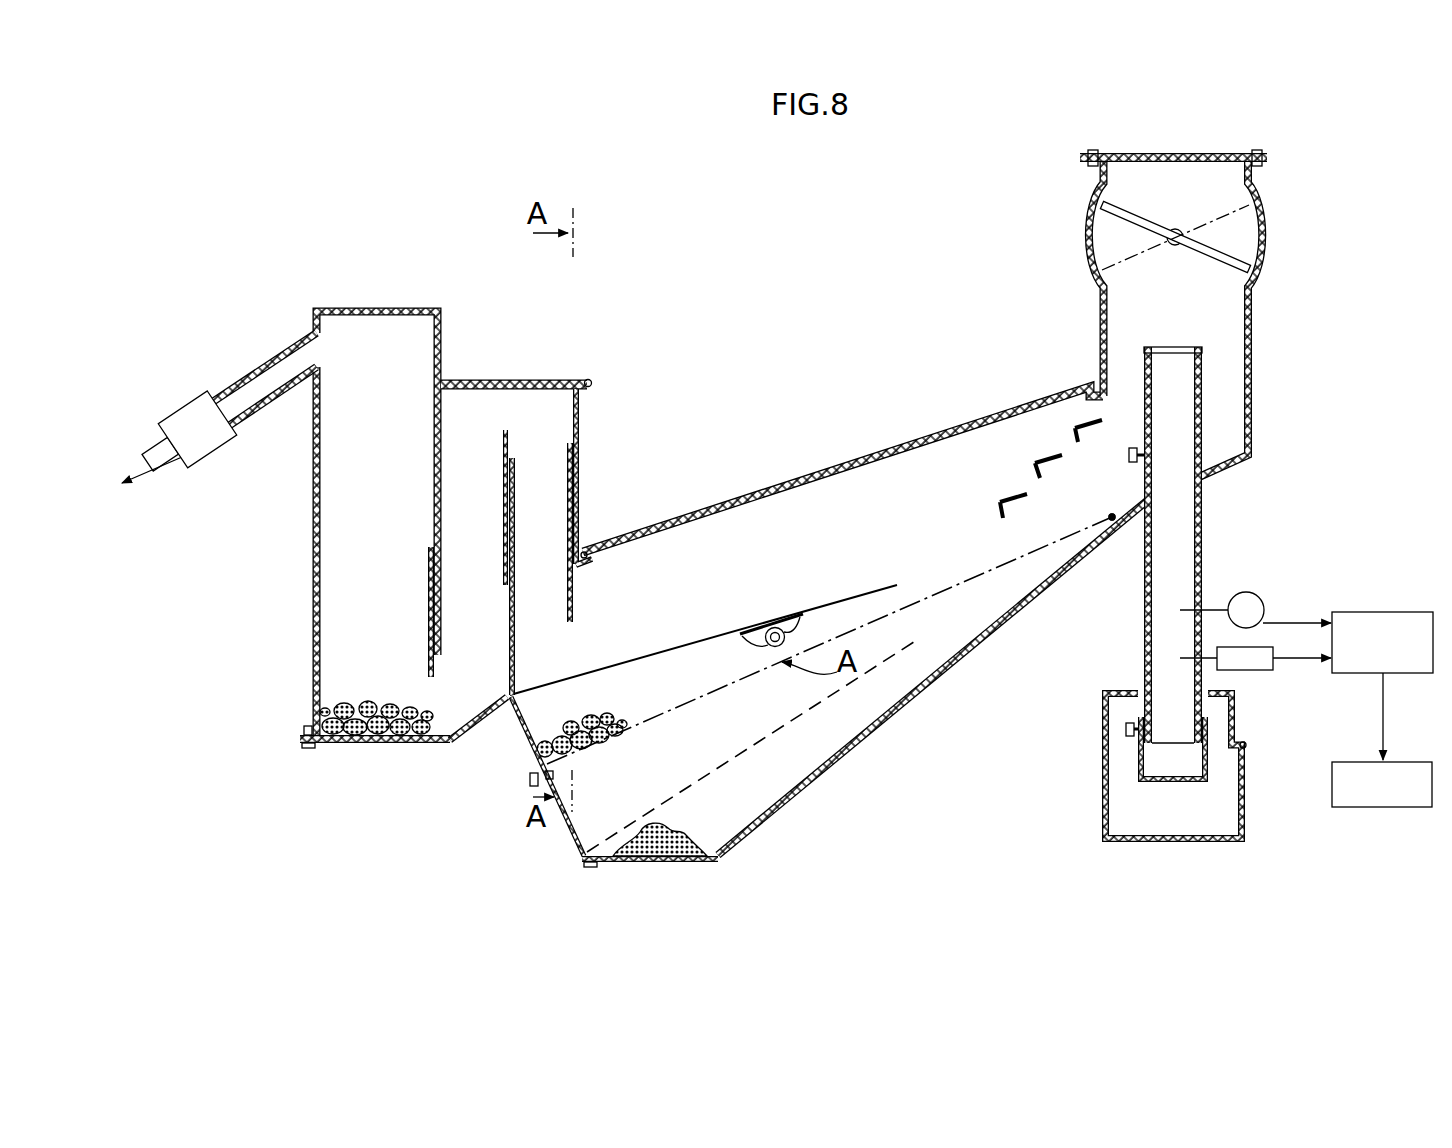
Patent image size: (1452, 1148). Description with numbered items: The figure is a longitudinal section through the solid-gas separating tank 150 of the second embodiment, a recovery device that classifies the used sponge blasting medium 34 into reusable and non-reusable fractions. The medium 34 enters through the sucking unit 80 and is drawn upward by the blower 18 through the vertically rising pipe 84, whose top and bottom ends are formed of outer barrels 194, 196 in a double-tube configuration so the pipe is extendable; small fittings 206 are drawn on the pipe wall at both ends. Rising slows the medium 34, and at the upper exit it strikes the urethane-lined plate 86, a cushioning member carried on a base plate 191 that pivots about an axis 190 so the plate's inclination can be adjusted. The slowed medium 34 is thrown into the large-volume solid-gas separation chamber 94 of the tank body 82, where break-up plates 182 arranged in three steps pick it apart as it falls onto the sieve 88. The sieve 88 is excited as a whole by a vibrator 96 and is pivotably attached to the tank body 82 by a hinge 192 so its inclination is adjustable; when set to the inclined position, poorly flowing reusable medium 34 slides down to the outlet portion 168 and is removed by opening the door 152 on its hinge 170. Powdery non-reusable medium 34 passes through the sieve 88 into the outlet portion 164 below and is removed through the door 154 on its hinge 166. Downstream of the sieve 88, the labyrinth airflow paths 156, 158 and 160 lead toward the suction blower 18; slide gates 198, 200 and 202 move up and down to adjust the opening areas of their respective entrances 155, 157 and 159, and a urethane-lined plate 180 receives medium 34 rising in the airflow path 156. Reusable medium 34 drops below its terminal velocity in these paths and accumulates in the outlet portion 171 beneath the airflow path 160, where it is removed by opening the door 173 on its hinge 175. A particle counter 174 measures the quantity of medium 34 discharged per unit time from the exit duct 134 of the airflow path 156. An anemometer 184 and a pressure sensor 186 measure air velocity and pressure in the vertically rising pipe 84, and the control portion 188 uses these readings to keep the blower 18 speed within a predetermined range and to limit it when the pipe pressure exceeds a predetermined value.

The exit duct 134 is at (160, 432).
The particle counter 174 is at (213, 450).
The airflow path 160 is at (395, 557).
The slide gate 200 is at (502, 447).
The urethane-lined plate 180 is at (548, 380).
The entrance 157 is at (507, 413).
The airflow path 158 is at (515, 487).
The airflow path 156 is at (543, 517).
The slide gate 198 is at (583, 590).
The entrance 155 is at (580, 640).
The slide gate 202 is at (428, 622).
The entrance 159 is at (428, 698).
The outlet portion 171 is at (330, 705).
The door 173 is at (338, 745).
The blasting medium 34 is at (378, 745).
The hinge 175 is at (452, 744).
The hinge 170 is at (507, 708).
The outlet portion 168 is at (530, 770).
The door 152 is at (527, 750).
The door 154 is at (645, 865).
The hinge 166 is at (735, 865).
The outlet portion 164 is at (787, 748).
The sieve 88 is at (695, 773).
The vibrator 96 is at (785, 645).
The solid-gas separation chamber 94 is at (802, 523).
The tank body 82 is at (961, 422).
The solid-gas separating tank 150 is at (922, 358).
The break-up plate 182 is at (1077, 427).
The sensor 206 is at (1127, 453).
The hinge 192 is at (1112, 522).
The axis 190 is at (1175, 229).
The base plate 191 is at (1232, 248).
The urethane-lined plate 86 is at (1200, 258).
The outer barrel 194 is at (1207, 397).
The vertically rising pipe 84 is at (1200, 537).
The pressure sensor 186 is at (1265, 601).
The control portion 188 is at (1393, 612).
The anemometer 184 is at (1250, 671).
The outer barrel 196 is at (1140, 768).
The sucking unit 80 is at (1252, 811).
The blower 18 is at (1383, 808).